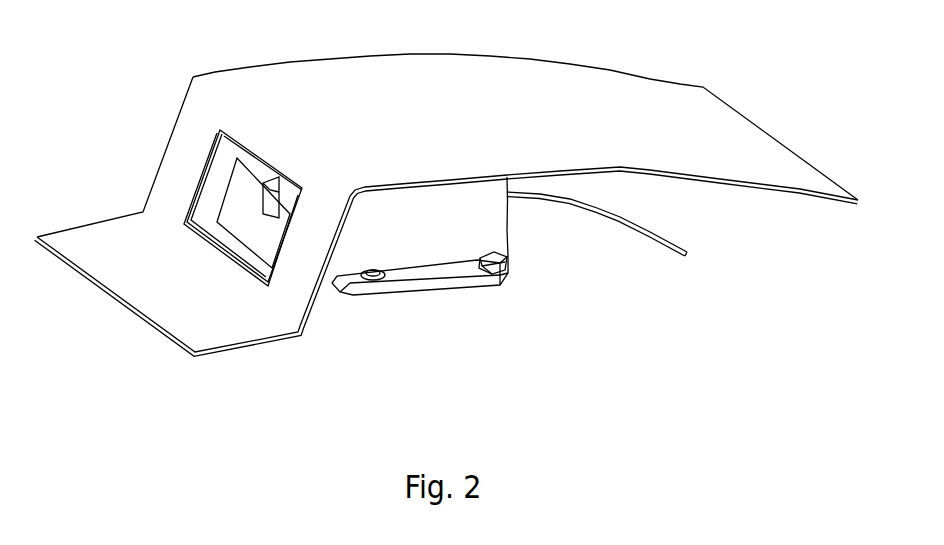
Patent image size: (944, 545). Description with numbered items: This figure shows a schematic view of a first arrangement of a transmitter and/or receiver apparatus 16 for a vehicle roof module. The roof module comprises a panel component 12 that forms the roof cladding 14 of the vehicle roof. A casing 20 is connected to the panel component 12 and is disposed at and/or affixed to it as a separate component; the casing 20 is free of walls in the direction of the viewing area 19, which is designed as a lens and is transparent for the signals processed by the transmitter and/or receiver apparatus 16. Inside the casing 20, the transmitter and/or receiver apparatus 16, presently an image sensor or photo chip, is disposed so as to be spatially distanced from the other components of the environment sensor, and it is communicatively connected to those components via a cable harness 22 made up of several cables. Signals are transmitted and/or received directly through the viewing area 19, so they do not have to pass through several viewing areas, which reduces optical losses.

The panel component 12 is at (403, 107).
The roof cladding 14 is at (495, 108).
The transmitter and/or receiver apparatus 16 is at (273, 192).
The viewing area 19 is at (202, 215).
The casing 20 is at (448, 232).
The cable harness 22 is at (617, 217).